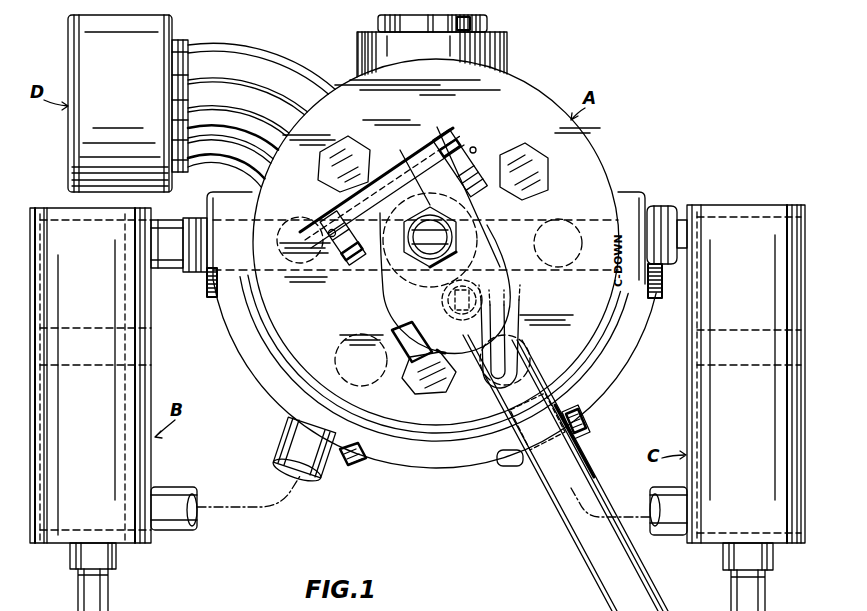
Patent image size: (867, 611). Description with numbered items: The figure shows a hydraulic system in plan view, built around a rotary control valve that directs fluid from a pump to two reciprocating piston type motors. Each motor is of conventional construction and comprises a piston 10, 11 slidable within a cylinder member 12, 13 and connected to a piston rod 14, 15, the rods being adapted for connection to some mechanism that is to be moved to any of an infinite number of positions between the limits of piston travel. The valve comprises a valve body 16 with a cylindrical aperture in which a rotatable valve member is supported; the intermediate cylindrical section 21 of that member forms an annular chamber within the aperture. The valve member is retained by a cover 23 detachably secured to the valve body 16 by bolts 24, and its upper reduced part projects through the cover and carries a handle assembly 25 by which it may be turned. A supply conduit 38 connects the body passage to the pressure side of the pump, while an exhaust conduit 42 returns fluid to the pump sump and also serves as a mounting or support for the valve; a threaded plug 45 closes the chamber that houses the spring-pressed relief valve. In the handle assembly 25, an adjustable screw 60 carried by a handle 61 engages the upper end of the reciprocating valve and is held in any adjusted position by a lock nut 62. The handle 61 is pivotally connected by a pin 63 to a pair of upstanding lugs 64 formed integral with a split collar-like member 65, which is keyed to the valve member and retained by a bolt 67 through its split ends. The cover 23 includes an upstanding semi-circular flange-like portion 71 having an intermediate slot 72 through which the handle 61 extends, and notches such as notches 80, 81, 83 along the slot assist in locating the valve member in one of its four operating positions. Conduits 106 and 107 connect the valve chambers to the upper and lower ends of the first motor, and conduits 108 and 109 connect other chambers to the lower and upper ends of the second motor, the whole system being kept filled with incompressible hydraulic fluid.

The piston 10 is at (128, 347).
The piston 11 is at (710, 350).
The cylinder member 12 is at (128, 398).
The cylinder member 13 is at (700, 396).
The piston rod 14 is at (105, 592).
The piston rod 15 is at (738, 591).
The valve body 16 is at (507, 58).
The intermediate cylindrical section 21 is at (445, 373).
The cover 23 is at (592, 142).
The bolts 24 is at (350, 150).
The handle assembly 25 is at (380, 283).
The supply conduit 38 is at (200, 90).
The exhaust conduit 42 is at (270, 68).
The plug 45 is at (487, 25).
The adjustable screw 60 is at (422, 212).
The handle 61 is at (585, 540).
The lock nut 62 is at (402, 300).
The pin 63 is at (475, 142).
The upstanding lugs 64 is at (452, 135).
The split collar-like member 65 is at (490, 250).
The bolt 67 is at (412, 380).
The flange-like portion 71 is at (390, 462).
The slot 72 is at (266, 335).
The notch 80 is at (296, 215).
The notch 81 is at (335, 365).
The notch 83 is at (535, 284).
The conduit 106 is at (198, 272).
The conduit 107 is at (278, 452).
The conduit 108 is at (588, 450).
The conduit 109 is at (668, 210).